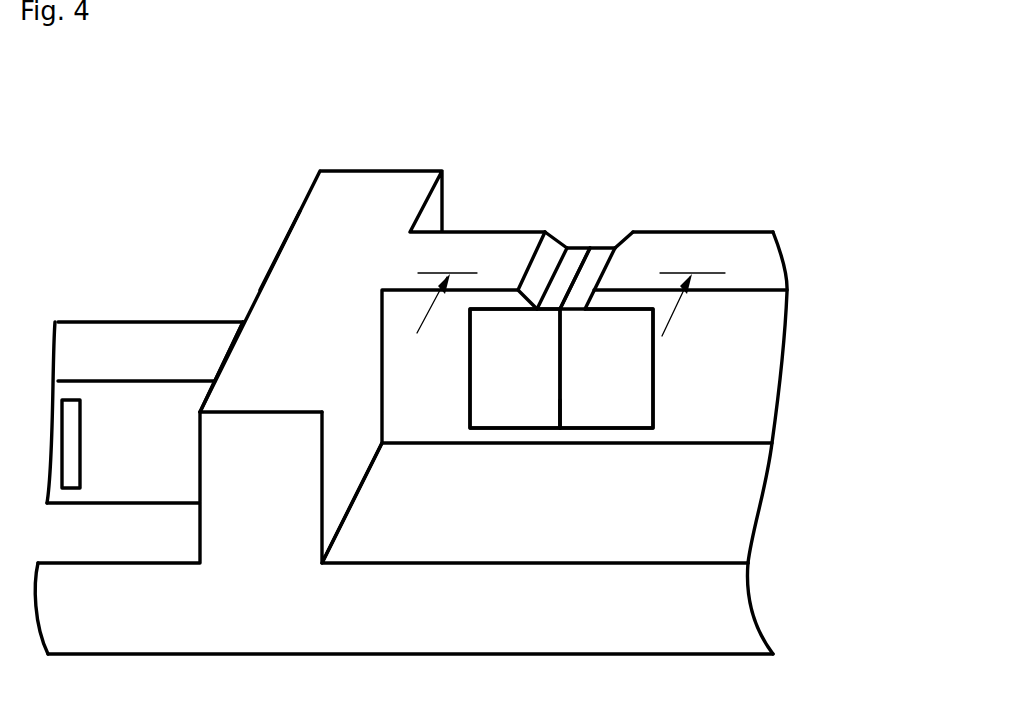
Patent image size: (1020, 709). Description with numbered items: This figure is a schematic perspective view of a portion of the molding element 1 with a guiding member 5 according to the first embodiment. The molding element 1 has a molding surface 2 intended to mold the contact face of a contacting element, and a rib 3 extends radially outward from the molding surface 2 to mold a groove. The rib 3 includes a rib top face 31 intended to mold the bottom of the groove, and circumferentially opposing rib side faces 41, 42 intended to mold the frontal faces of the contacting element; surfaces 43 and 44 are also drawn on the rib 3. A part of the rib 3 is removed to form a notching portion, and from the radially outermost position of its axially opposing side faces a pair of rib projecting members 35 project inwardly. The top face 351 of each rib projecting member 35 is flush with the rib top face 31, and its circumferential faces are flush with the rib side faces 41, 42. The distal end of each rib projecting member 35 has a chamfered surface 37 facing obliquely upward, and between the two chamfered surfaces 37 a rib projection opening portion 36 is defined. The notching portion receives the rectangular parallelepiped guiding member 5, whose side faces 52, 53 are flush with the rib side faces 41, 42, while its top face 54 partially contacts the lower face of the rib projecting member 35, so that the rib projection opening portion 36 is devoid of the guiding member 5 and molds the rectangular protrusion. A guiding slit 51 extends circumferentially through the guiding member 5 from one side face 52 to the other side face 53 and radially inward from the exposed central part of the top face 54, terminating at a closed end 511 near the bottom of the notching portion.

The molding element 1 is at (125, 187).
The molding surface 2 is at (95, 545).
The rib 3 is at (340, 170).
The guiding member 5 is at (615, 352).
The rib top face 31 is at (304, 297).
The rib projecting member 35 is at (66, 352).
The rib projection opening portion 36 is at (568, 247).
The chamfered surface 37 is at (537, 245).
The rib side face 41 is at (136, 465).
The rib side face 42 is at (192, 322).
The inclined surface 43 is at (355, 448).
The inclined portion 44 is at (293, 228).
The guiding slit 51 is at (558, 378).
The side face 52 is at (498, 387).
The side face 53 is at (603, 247).
The top face 54 is at (573, 310).
The top face 351 is at (500, 247).
The closed end 511 is at (562, 413).